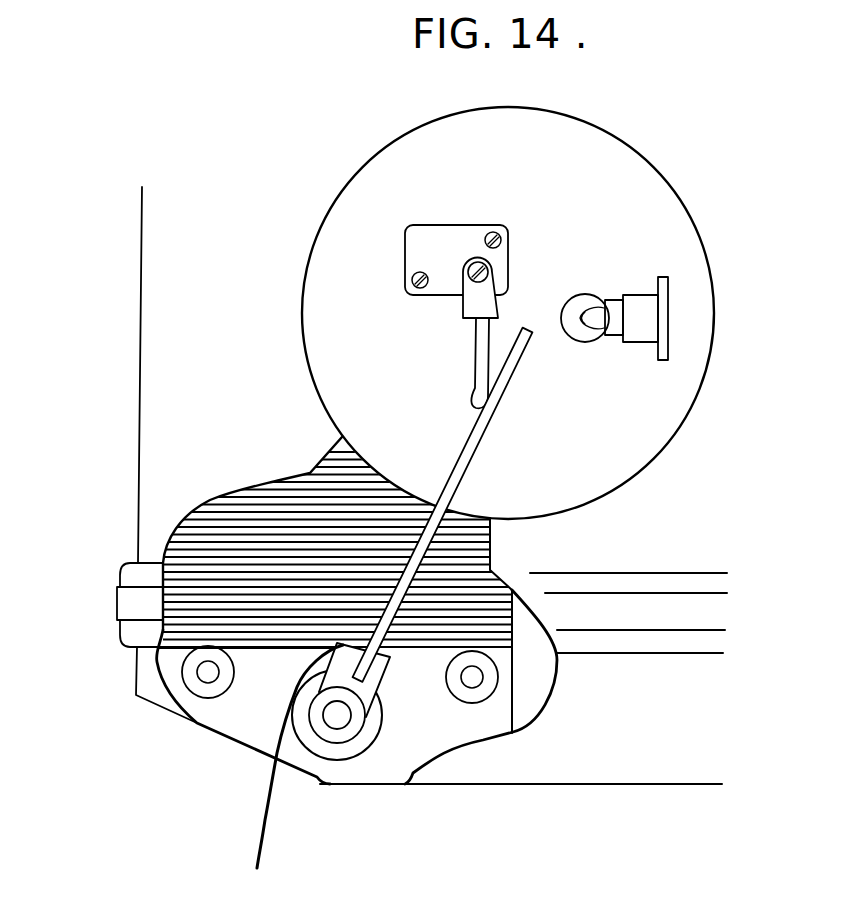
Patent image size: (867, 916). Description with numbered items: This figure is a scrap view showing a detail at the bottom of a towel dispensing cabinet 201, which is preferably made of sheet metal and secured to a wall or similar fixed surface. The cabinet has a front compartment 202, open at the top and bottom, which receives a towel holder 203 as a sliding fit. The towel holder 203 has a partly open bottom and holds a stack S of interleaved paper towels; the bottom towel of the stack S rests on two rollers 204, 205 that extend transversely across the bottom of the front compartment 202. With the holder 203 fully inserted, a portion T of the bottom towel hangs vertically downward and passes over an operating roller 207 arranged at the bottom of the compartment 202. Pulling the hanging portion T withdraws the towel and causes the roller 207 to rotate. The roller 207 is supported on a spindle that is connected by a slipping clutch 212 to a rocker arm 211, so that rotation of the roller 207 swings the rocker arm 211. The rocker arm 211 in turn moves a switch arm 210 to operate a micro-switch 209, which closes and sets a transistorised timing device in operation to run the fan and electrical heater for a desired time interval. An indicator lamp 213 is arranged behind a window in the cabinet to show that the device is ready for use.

The cabinet 201 is at (173, 388).
The front compartment 202 is at (215, 725).
The towel holder 203 is at (505, 660).
The roller 204 is at (182, 673).
The roller 205 is at (487, 689).
The operating roller 207 is at (370, 728).
The micro-switch 209 is at (448, 237).
The switch arm 210 is at (475, 343).
The rocker arm 211 is at (510, 383).
The slipping clutch 212 is at (333, 722).
The indicator lamp 213 is at (583, 294).
The stack of interleaved paper towels S is at (433, 568).
The hanging portion of bottom towel T is at (258, 835).